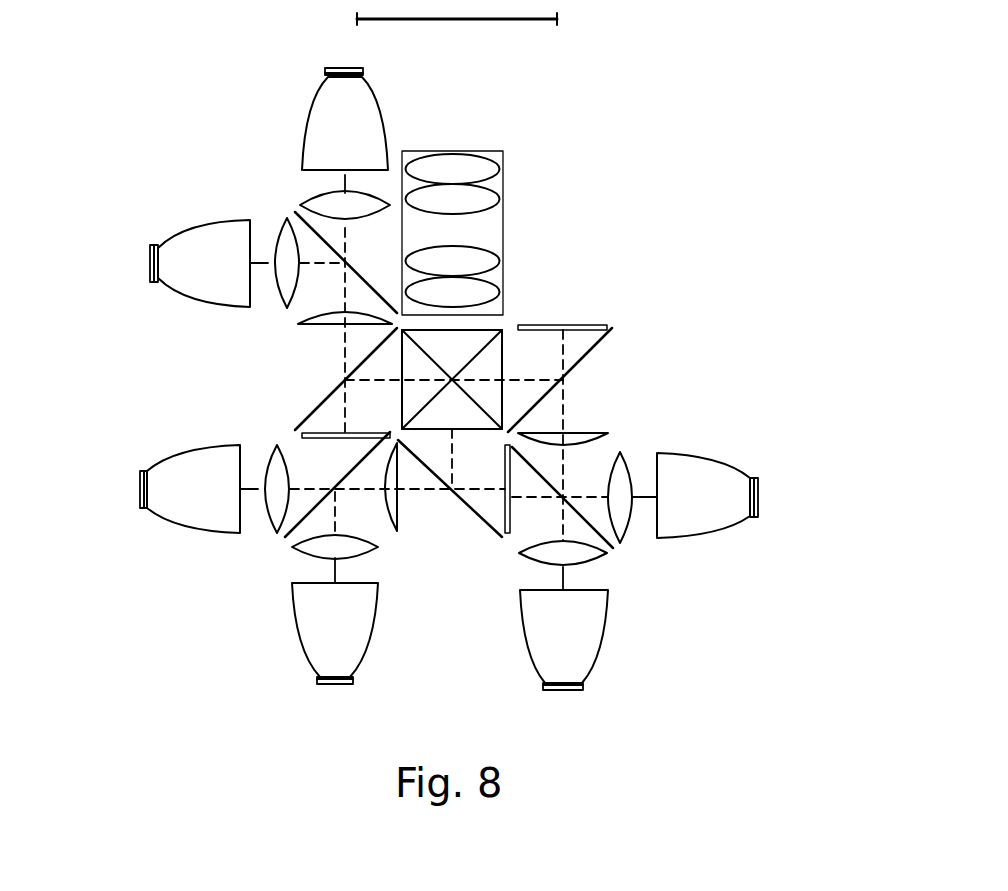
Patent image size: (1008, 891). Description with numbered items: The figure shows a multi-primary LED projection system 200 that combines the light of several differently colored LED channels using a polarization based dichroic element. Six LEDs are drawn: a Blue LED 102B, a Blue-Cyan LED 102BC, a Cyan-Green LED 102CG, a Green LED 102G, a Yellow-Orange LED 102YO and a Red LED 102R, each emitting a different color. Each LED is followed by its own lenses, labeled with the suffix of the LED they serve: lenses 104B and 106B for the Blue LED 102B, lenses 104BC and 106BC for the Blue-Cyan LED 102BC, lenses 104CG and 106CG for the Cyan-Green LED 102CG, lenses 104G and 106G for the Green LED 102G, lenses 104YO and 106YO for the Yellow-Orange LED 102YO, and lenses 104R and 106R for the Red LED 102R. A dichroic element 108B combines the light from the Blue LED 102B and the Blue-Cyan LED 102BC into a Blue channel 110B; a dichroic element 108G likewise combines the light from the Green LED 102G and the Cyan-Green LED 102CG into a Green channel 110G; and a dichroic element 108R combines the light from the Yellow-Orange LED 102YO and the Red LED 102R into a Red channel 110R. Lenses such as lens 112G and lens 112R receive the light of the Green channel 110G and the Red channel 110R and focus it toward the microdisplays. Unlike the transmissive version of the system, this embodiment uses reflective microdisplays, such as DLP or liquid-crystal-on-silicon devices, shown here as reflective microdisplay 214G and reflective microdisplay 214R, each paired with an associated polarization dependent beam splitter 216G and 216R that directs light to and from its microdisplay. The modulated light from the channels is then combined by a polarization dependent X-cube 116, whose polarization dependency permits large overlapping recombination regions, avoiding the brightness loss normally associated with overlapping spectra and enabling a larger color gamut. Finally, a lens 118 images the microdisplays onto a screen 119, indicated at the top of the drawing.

The multi-primary LED projection system 200 is at (712, 157).
The screen 119 is at (557, 24).
The lens 118 is at (503, 178).
The polarization dependent X-cube 116 is at (502, 330).
The Blue channel 110B is at (148, 137).
The Blue LED 102B is at (325, 68).
The lens 104B is at (306, 116).
The lens 106B is at (310, 195).
The Blue-Cyan LED 102BC is at (152, 245).
The lens 104BC is at (185, 291).
The lens 106BC is at (278, 306).
The dichroic element 108B is at (350, 272).
The lens 112R is at (340, 326).
The polarization dependent beam splitter 216R is at (312, 414).
The reflective microdisplay 214R is at (303, 434).
The Green channel 110G is at (177, 640).
The Green LED 102G is at (141, 508).
The lens 104G is at (190, 528).
The lens 106G is at (270, 532).
The dichroic element 108G is at (338, 503).
The lens 112G is at (398, 533).
The polarization dependent beam splitter 216G is at (470, 508).
The reflective microdisplay 214G is at (503, 530).
The lens 106CG is at (370, 553).
The lens 104CG is at (367, 653).
The Cyan-Green LED 102CG is at (317, 681).
The lens 106YO is at (603, 558).
The lens 104YO is at (597, 650).
The Yellow-Orange LED 102YO is at (583, 687).
The Red channel 110R is at (722, 389).
The dichroic element 108R is at (566, 492).
The lens 106R is at (625, 457).
The lens 104R is at (705, 458).
The Red LED 102R is at (758, 483).